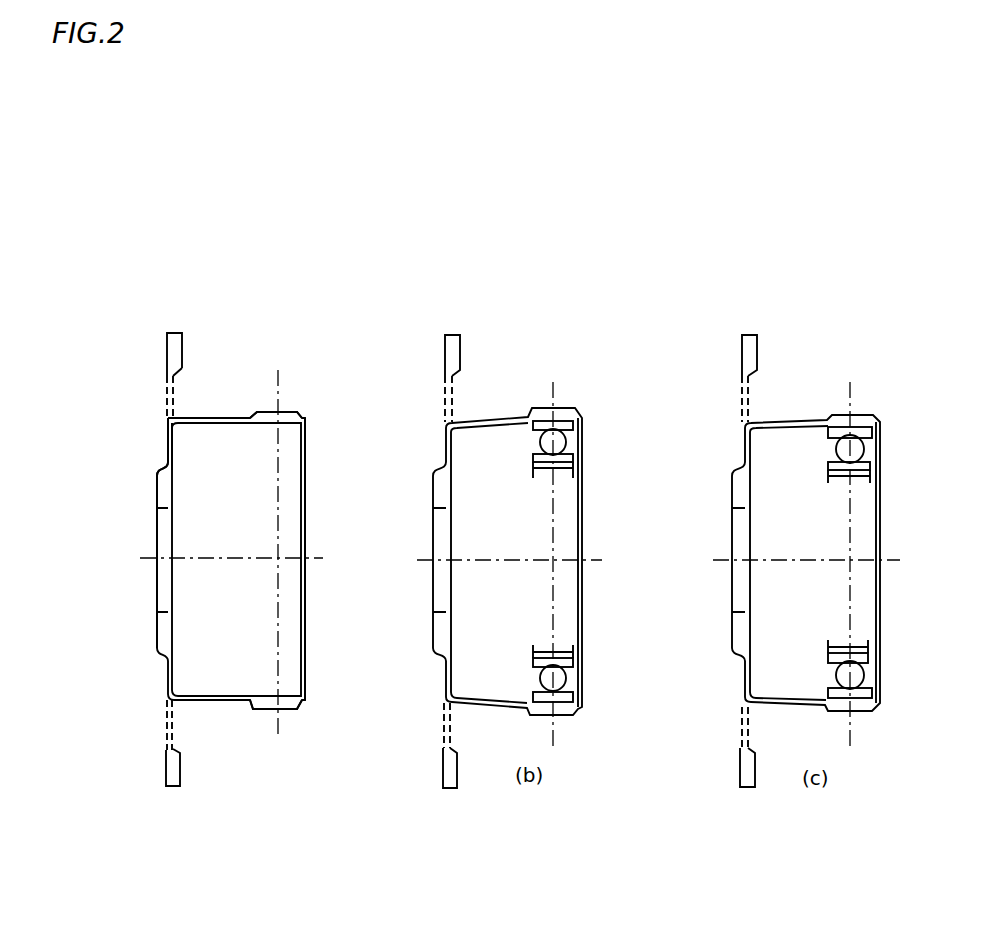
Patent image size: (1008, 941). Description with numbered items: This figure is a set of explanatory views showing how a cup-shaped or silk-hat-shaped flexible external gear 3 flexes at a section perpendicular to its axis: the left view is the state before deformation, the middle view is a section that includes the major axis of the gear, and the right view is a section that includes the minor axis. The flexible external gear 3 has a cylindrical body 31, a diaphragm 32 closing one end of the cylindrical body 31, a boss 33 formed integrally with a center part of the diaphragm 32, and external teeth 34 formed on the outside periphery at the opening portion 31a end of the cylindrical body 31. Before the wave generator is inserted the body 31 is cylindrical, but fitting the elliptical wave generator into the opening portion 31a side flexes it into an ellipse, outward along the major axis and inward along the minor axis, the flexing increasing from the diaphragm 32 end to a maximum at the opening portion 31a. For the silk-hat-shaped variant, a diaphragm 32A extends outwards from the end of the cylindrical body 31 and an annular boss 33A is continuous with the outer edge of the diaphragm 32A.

The cup-shaped flexible external gear 3 is at (251, 290).
The cylindrical body 31 is at (192, 418).
The opening portion 31a is at (304, 419).
The diaphragm 32 is at (172, 439).
The diaphragm 32A is at (172, 384).
The boss 33 is at (165, 498).
The annular boss 33A is at (176, 334).
The external teeth 34 is at (288, 412).